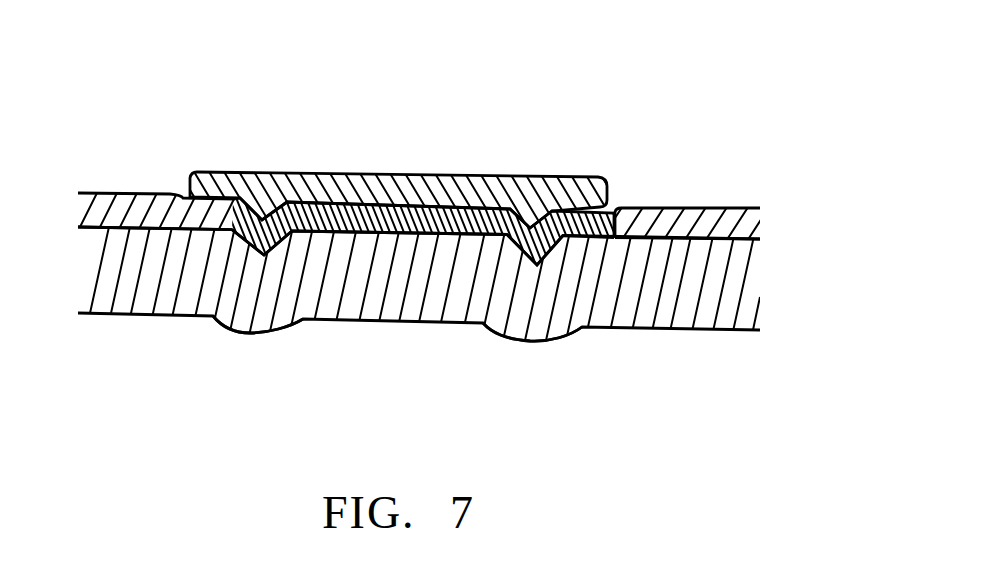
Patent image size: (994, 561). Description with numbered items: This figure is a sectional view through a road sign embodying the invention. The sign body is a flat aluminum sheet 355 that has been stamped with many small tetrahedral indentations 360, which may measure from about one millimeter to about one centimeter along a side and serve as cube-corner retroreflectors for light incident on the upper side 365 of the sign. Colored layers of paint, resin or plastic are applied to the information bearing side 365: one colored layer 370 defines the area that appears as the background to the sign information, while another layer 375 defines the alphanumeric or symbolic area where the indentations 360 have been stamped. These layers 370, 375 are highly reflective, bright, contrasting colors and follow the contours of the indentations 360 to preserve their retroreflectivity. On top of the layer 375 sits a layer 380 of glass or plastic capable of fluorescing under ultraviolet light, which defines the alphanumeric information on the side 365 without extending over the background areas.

The flat aluminum sheet 355 is at (627, 287).
The tetrahedral indentations 360 is at (242, 335).
The upper side 365 is at (442, 155).
The colored layer 370 is at (117, 193).
The layer 375 is at (616, 207).
The layer of glass or plastic 380 is at (325, 172).